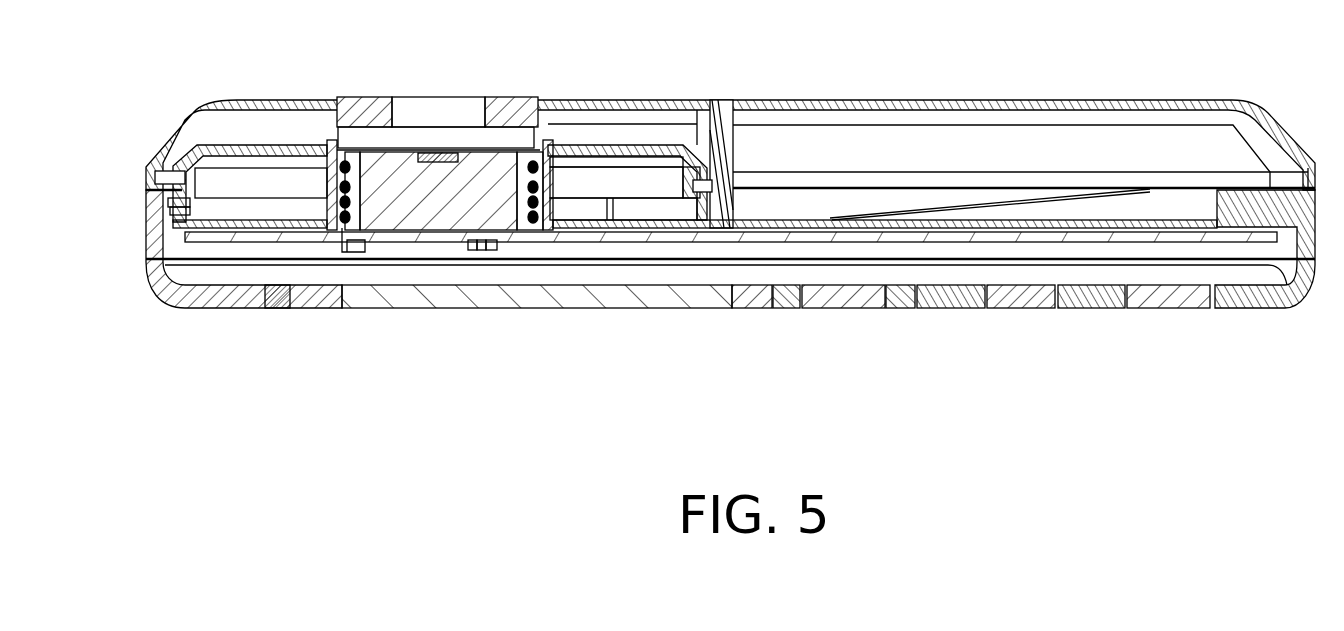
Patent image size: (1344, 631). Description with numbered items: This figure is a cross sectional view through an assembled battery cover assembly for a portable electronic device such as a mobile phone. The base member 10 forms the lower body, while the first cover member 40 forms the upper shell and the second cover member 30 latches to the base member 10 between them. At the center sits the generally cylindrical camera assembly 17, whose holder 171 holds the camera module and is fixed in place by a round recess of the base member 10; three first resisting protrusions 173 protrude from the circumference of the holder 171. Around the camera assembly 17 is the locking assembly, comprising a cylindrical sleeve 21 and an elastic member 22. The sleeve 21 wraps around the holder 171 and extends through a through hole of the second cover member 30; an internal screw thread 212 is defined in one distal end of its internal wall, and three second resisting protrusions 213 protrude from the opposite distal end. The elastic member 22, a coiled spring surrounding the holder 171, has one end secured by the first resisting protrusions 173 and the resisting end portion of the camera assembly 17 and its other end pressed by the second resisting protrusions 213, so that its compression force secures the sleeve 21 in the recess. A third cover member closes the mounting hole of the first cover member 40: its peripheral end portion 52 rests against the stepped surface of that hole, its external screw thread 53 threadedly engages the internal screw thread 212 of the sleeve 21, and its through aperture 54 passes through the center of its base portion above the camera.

The base member 10 is at (682, 270).
The camera assembly 17 is at (447, 232).
The holder 171 is at (523, 232).
The first resisting protrusions 173 is at (340, 178).
The sleeve 21 is at (590, 130).
The internal screw thread 212 is at (545, 130).
The second resisting protrusions 213 is at (337, 230).
The elastic member 22 is at (340, 167).
The second cover member 30 is at (672, 130).
The first cover member 40 is at (758, 105).
The peripheral end portion 52 is at (333, 100).
The external screw thread 53 is at (541, 103).
The through aperture 54 is at (430, 117).